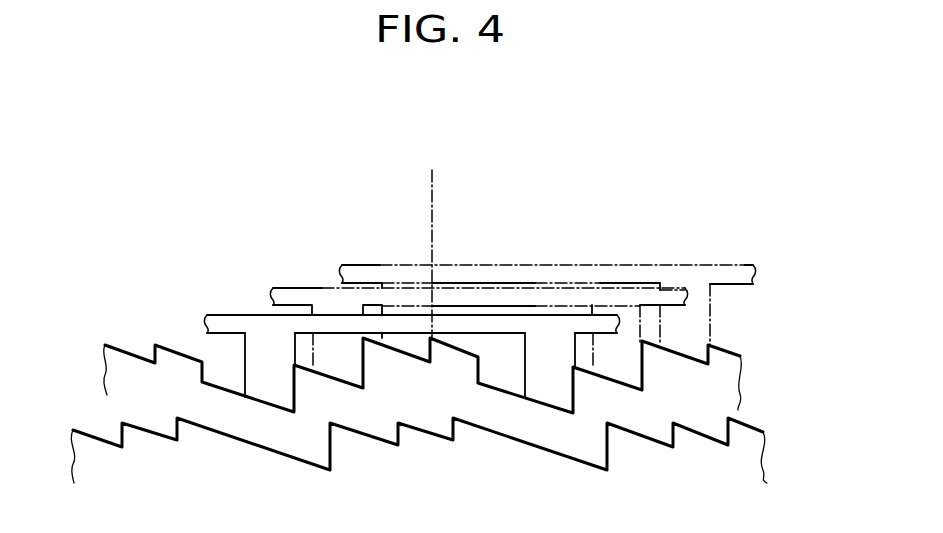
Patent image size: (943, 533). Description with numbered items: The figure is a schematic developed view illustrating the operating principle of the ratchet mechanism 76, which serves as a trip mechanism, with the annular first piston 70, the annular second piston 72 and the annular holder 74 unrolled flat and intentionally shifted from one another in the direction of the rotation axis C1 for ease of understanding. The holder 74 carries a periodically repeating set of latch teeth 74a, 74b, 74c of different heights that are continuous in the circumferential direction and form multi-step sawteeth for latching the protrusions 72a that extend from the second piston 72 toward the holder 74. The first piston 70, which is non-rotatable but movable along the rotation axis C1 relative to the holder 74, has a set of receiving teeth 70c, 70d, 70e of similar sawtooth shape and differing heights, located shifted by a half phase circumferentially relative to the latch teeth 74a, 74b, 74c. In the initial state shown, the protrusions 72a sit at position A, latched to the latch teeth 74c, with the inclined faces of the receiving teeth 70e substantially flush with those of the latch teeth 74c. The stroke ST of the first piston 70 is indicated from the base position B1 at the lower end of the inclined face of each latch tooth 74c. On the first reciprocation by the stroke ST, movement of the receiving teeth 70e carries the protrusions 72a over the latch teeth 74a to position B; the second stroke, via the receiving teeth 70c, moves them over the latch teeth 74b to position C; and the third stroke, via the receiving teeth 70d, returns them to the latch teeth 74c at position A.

The first piston 70 is at (776, 479).
The receiving tooth 70c is at (103, 437).
The receiving tooth 70d is at (158, 430).
The receiving tooth 70e is at (258, 440).
The second piston 72 is at (336, 260).
The protrusion 72a is at (274, 388).
The holder 74 is at (746, 359).
The latch tooth 74a is at (340, 375).
The latch tooth 74b is at (141, 356).
The latch tooth 74c is at (252, 377).
The ratchet mechanism 76 is at (698, 254).
The position A is at (250, 323).
The position B is at (319, 298).
The position C is at (385, 274).
The rotation axis C1 is at (436, 183).
The base position B1 is at (776, 417).
The stroke ST is at (79, 367).